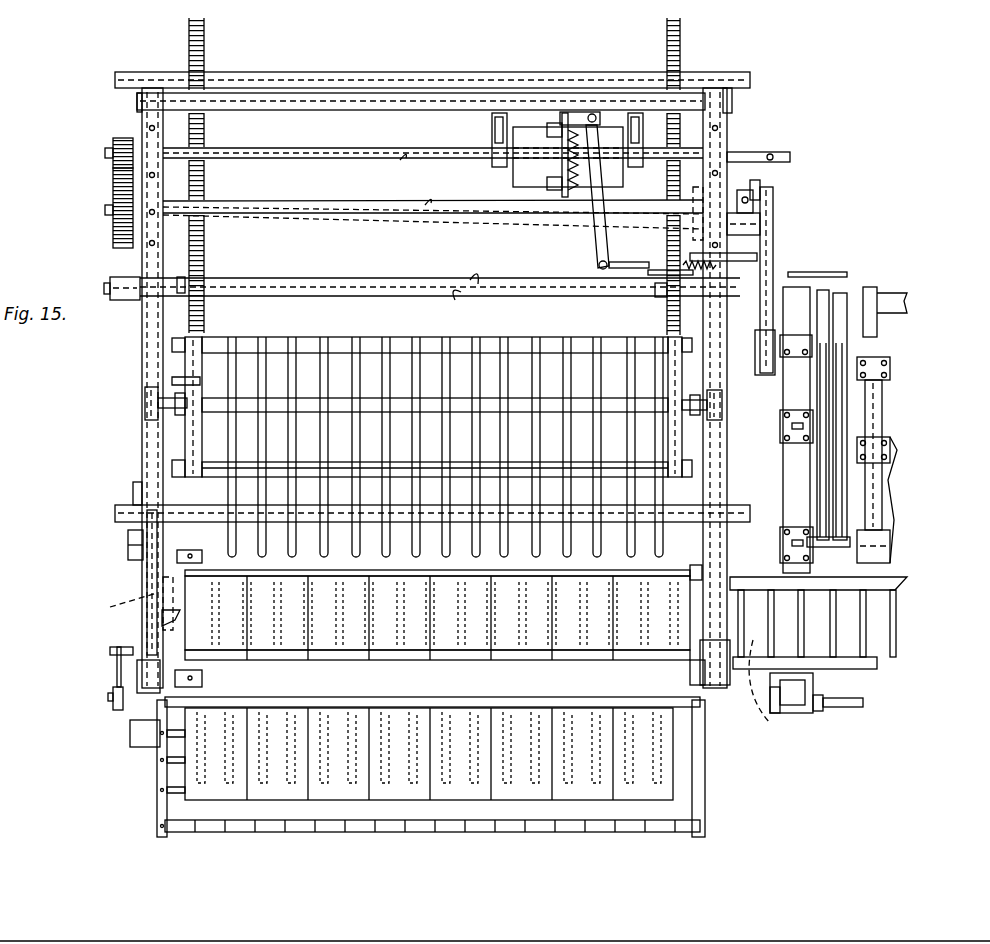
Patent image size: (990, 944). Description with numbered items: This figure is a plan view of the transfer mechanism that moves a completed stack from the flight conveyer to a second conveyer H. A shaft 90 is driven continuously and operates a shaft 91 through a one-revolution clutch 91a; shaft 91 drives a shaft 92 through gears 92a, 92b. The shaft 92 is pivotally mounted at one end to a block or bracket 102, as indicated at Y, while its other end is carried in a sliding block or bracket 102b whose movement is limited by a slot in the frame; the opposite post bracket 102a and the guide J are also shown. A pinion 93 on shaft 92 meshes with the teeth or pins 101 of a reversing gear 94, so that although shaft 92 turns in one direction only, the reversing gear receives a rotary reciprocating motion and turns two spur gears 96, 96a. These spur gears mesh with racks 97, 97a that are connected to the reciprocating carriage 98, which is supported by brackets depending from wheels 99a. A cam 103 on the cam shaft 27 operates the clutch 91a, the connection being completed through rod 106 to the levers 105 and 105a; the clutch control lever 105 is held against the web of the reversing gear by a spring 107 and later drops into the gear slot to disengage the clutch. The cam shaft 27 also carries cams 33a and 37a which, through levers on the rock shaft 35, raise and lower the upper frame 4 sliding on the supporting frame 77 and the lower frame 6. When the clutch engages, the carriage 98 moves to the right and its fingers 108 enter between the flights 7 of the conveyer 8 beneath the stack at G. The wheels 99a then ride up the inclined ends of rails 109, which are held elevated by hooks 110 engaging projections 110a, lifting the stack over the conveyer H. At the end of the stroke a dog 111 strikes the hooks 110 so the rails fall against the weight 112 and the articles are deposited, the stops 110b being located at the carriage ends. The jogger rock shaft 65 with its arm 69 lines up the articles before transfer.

The rack 97a is at (189, 37).
The rack 97 is at (682, 45).
The gear 92a is at (124, 138).
The gear 92b is at (113, 183).
The block or bracket 102 is at (150, 243).
The right frame post 102a is at (722, 173).
The sliding block or bracket 102b is at (774, 223).
The pivot point Y is at (154, 214).
The shaft 91 is at (310, 156).
The clutch 91a is at (616, 180).
The shaft 92 is at (465, 206).
The shaft 90 is at (791, 158).
The pinion 93 is at (758, 183).
The guide J is at (702, 212).
The reversing gear 94 is at (774, 245).
The lever 105a is at (600, 254).
The clutch control lever 105 is at (625, 270).
The rod 106 is at (648, 273).
The spring 107 is at (723, 312).
The teeth or pins 101 is at (715, 338).
The spur gear 96 is at (666, 320).
The spur gear 96a is at (206, 318).
The reciprocating carriage 98 is at (743, 478).
The fingers or grating 108 is at (276, 566).
The dog 111 is at (175, 380).
The wheels 99a is at (145, 410).
The cam 33a is at (841, 298).
The cam 37a is at (870, 297).
The cam 103 is at (807, 363).
The cam shaft 27 is at (817, 340).
The rock shaft 35 is at (783, 450).
The frame 4 is at (891, 370).
The supporting frame 77 is at (893, 413).
The lower frame 6 is at (891, 542).
The cross pieces or flights 7 is at (835, 613).
The conveyer 8 is at (850, 662).
The arm 69 is at (800, 716).
The rock shaft 65 is at (840, 706).
The projections 110a is at (437, 665).
The stop block 110b is at (182, 642).
The hooks 110 is at (163, 583).
The rails 109 is at (150, 553).
The weight 112 is at (112, 692).
The conveyor tray G is at (437, 615).
The conveyer H is at (417, 767).